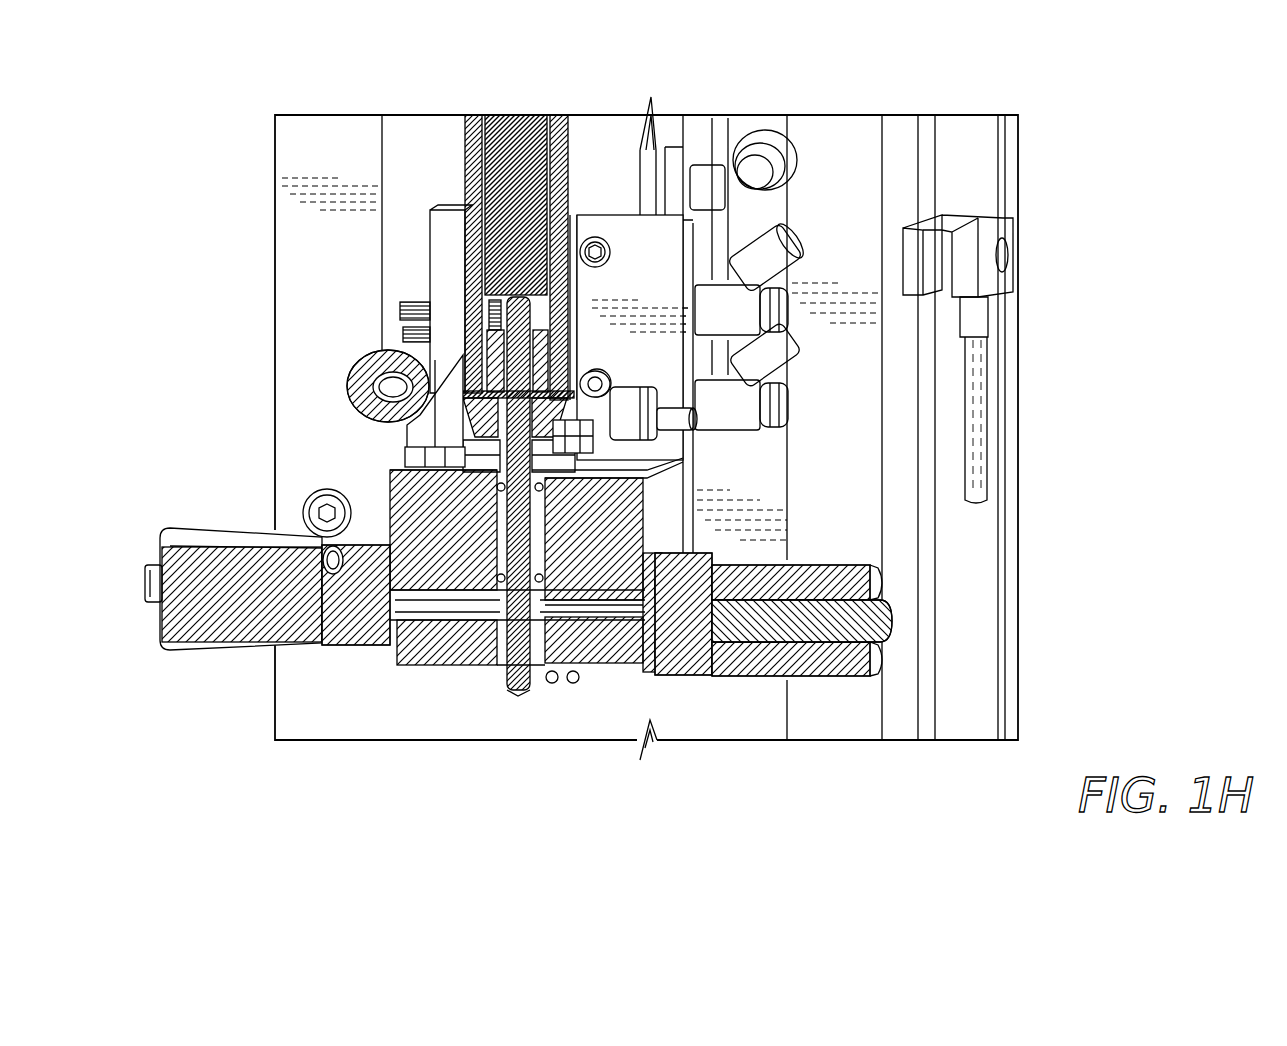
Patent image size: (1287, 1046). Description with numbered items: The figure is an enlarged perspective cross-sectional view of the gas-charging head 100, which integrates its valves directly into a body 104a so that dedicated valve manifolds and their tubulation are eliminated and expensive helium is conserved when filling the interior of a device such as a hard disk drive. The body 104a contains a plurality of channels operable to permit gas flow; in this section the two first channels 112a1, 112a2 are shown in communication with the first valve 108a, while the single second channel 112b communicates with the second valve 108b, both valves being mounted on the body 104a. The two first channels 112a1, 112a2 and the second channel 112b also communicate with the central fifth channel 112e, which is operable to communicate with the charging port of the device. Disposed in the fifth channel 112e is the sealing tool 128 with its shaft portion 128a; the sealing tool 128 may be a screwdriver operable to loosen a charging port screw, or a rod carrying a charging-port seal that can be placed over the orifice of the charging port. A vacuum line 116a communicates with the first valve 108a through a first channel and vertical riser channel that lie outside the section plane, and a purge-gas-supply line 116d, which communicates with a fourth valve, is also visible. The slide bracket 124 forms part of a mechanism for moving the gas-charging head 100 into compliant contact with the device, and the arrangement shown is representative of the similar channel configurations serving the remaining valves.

The gas-charging head 100 is at (840, 57).
The slide bracket 124 is at (632, 165).
The sealing tool 128 is at (537, 672).
The shaft portion 128a is at (505, 348).
The vacuum line 116a is at (376, 388).
The purge-gas-supply line 116d is at (676, 422).
The body 104a is at (391, 665).
The first channel 112a1 is at (421, 614).
The first channel 112a2 is at (460, 594).
The fifth channel 112e is at (512, 666).
The second channel 112b is at (613, 614).
The first valve 108a is at (206, 651).
The second valve 108b is at (811, 666).